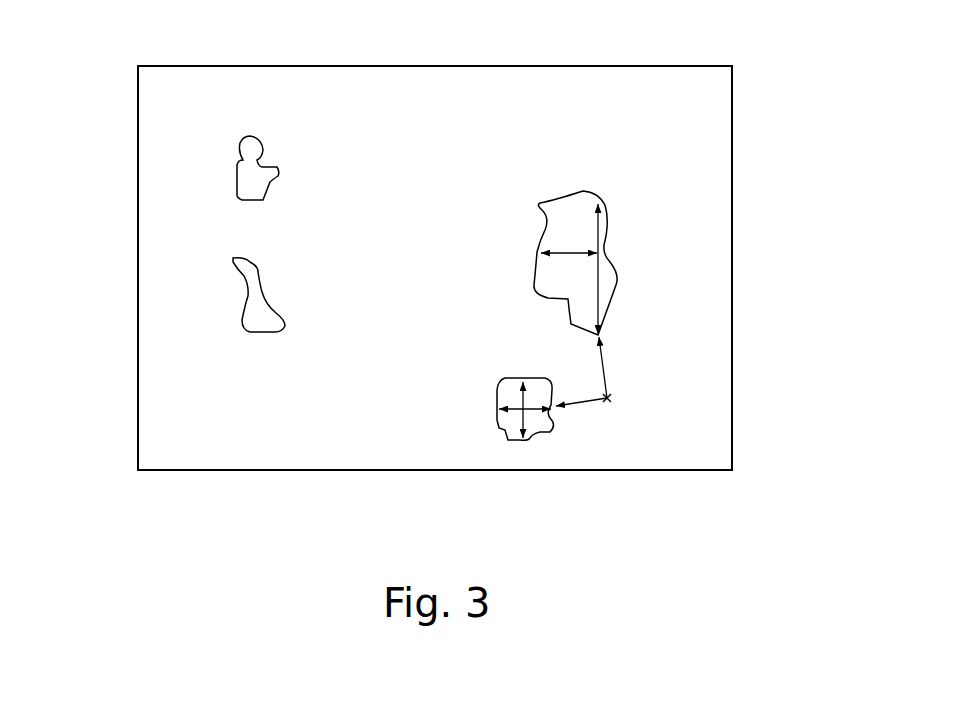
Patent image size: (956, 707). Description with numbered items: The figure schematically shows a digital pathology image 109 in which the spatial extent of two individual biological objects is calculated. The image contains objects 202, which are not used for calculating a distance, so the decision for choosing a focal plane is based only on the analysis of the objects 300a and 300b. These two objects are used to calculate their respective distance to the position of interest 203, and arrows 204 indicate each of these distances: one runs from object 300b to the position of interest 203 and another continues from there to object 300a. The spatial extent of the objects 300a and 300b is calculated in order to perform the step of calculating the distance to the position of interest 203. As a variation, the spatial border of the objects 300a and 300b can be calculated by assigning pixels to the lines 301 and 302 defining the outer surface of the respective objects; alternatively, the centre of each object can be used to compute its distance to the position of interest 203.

The digital pathology image 109 is at (733, 212).
The objects 202 is at (240, 156).
The position of interest 203 is at (612, 398).
The arrows 204 is at (604, 378).
The object 300a is at (610, 258).
The object 300b is at (527, 440).
The line 301 is at (581, 191).
The line 302 is at (503, 432).